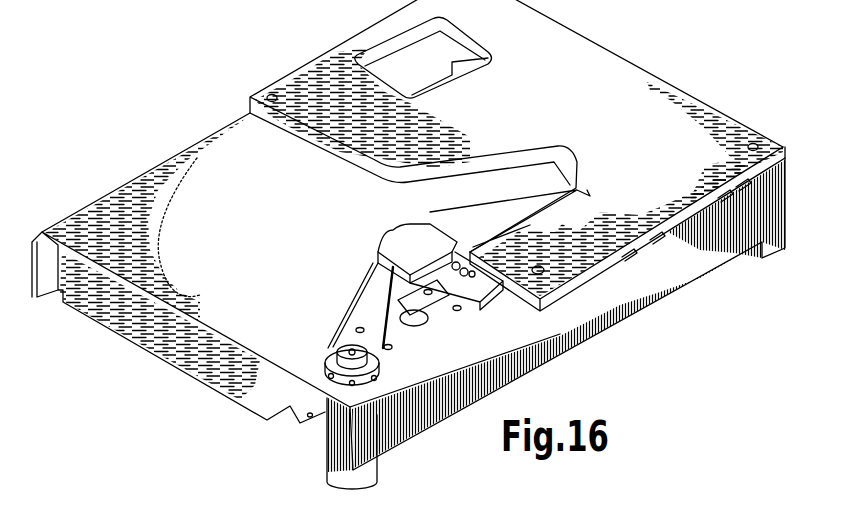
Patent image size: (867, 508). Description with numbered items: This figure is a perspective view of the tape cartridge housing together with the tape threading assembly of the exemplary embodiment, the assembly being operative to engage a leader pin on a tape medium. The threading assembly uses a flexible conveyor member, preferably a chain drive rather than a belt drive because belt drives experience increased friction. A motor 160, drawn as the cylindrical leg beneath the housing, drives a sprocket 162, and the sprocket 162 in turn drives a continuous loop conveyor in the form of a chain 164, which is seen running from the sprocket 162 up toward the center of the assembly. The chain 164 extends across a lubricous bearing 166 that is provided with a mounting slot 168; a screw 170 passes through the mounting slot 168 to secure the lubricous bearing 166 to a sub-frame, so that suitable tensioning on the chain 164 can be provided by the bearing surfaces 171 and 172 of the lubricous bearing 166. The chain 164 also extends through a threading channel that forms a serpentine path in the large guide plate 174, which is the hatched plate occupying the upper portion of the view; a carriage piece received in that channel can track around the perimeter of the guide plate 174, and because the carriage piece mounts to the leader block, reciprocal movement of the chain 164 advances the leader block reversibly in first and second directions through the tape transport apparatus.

The motor 160 is at (335, 443).
The sprocket 162 is at (332, 350).
The chain 164 is at (372, 285).
The lubricous bearing 166 is at (357, 233).
The mounting slot 168 is at (462, 262).
The screw 170 is at (485, 285).
The bearing surface 171 is at (378, 262).
The bearing surface 172 is at (378, 244).
The guide plate 174 is at (630, 82).